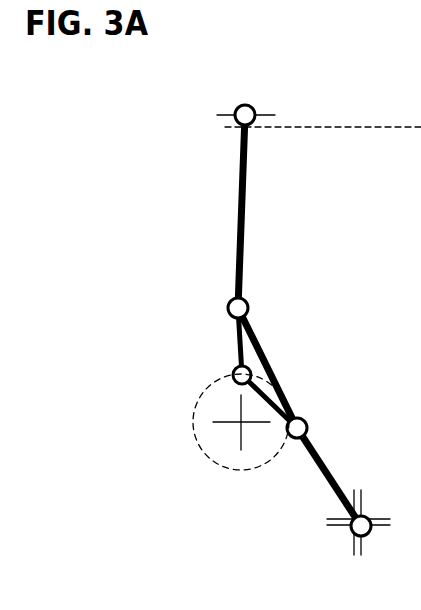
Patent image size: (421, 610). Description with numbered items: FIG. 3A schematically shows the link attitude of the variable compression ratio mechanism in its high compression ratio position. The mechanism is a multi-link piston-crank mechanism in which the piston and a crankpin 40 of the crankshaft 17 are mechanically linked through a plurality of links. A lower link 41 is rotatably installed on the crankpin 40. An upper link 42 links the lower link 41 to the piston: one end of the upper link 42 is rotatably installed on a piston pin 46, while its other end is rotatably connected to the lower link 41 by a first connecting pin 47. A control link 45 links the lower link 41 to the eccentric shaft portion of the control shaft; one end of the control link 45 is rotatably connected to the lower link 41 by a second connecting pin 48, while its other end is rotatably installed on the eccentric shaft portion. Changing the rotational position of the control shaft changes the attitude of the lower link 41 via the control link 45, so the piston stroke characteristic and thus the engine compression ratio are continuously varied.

The crankshaft 17 is at (210, 463).
The crankpin 40 is at (238, 374).
The lower link 41 is at (263, 343).
The upper link 42 is at (248, 220).
The control link 45 is at (328, 467).
The piston pin 46 is at (252, 104).
The first connecting pin 47 is at (250, 300).
The second connecting pin 48 is at (302, 416).